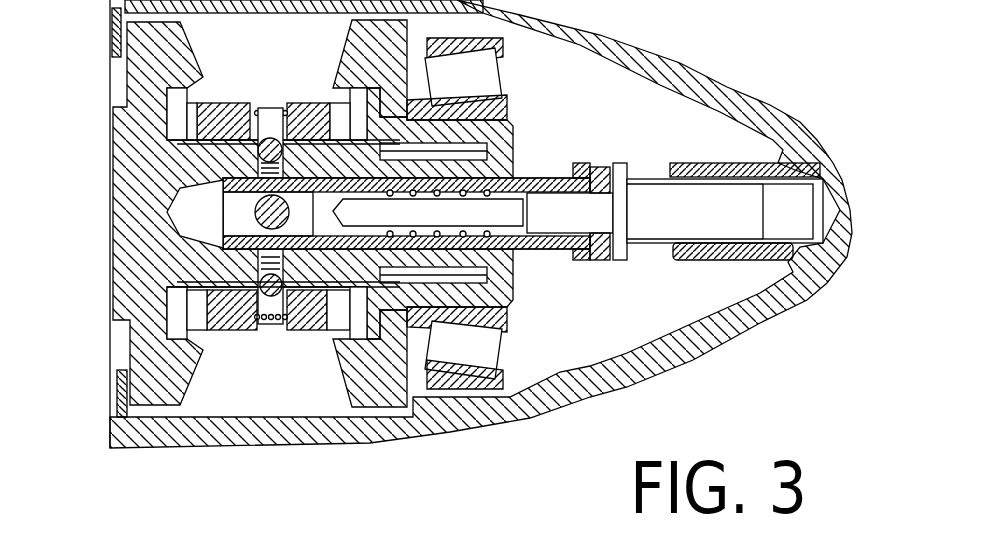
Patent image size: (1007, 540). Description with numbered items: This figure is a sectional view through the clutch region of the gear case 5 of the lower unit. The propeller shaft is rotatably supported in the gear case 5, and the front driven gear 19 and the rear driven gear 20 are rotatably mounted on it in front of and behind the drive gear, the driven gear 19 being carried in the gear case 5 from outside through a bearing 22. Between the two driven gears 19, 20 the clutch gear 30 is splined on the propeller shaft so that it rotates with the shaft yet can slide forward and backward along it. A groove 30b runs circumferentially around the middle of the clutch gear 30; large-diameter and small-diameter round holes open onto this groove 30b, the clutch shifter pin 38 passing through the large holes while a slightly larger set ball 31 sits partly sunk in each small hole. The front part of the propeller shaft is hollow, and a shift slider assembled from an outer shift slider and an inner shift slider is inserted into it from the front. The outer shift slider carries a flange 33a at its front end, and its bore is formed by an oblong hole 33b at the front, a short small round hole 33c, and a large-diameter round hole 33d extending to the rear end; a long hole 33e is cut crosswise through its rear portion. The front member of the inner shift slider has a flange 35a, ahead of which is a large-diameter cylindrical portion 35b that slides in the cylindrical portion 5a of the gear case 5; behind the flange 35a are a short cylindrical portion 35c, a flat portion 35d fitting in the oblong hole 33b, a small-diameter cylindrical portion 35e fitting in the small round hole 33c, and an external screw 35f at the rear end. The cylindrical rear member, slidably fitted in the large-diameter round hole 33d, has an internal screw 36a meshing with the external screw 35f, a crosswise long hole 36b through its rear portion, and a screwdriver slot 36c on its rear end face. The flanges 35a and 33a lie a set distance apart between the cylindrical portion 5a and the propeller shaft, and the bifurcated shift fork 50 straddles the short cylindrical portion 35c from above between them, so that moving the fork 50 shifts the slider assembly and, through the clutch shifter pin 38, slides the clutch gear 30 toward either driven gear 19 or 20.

The gear case 5 is at (770, 106).
The cylindrical portion 5a is at (706, 160).
The driven gear 19 is at (407, 420).
The driven gear 20 is at (150, 433).
The bearing 22 is at (497, 413).
The clutch gear 30 is at (231, 101).
The groove 30b is at (268, 98).
The set ball 31 is at (283, 108).
The flange 33a is at (594, 165).
The oblong hole 33b is at (572, 165).
The small round hole 33c is at (533, 180).
The large-diameter round hole 33d is at (513, 178).
The long hole 33e is at (273, 411).
The flange 35a is at (620, 260).
The large-diameter cylindrical portion 35b is at (660, 257).
The short cylindrical portion 35c is at (600, 222).
The flat portion 35d is at (563, 222).
The small-diameter cylindrical portion 35e is at (503, 338).
The external screw 35f is at (287, 325).
The internal screw 36a is at (338, 440).
The long hole 36b is at (217, 323).
The slot 36c is at (210, 222).
The clutch shifter pin 38 is at (205, 177).
The bifurcated shift fork 50 is at (605, 160).